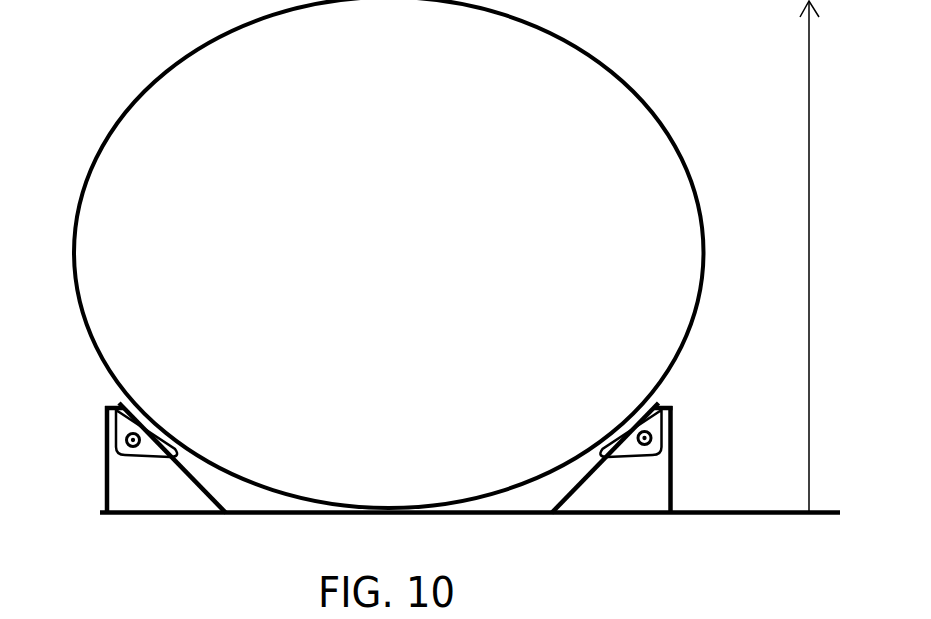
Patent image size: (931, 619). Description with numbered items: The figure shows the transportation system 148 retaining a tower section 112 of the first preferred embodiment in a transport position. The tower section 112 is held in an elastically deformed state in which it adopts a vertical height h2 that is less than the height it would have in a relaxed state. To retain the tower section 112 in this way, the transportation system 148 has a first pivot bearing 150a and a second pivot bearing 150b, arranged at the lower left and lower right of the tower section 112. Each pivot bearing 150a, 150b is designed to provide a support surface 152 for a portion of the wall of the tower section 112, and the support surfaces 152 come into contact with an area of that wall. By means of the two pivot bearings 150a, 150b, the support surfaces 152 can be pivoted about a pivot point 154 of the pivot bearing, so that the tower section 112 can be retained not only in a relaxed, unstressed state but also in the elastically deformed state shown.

The tower section 112 is at (429, 254).
The transportation system 148 is at (663, 508).
The first pivot bearing 150a is at (158, 472).
The second pivot bearing 150b is at (627, 470).
The support surface 152 is at (167, 425).
The pivot point 154 is at (105, 402).
The vertical height h2 is at (788, 256).